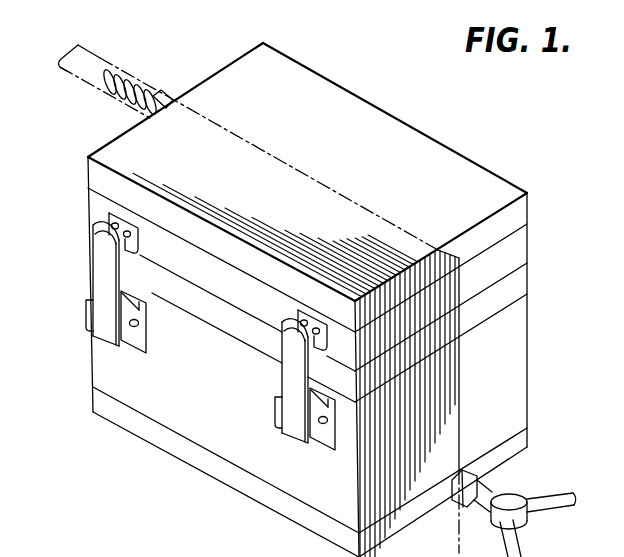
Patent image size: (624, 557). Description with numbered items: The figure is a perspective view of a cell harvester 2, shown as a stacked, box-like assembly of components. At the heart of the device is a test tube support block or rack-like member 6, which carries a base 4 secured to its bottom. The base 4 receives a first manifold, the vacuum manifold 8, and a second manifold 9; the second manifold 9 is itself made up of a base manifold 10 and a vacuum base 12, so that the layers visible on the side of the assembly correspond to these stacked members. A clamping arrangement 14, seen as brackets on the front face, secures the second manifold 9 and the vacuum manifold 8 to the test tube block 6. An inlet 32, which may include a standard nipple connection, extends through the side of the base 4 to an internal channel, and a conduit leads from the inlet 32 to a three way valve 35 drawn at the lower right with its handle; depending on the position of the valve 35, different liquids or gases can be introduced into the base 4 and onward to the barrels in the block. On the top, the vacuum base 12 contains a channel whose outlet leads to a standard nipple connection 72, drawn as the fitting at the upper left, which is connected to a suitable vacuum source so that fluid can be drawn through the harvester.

The cell harvester 2 is at (172, 108).
The base 4 is at (530, 438).
The test tube support block 6 is at (525, 373).
The vacuum manifold 8 is at (530, 288).
The second manifold 9 is at (84, 157).
The base manifold 10 is at (522, 247).
The vacuum base 12 is at (520, 213).
The clamping arrangement 14 is at (258, 408).
The inlet 32 is at (456, 510).
The three way valve 35 is at (515, 497).
The nipple connection 72 is at (118, 99).